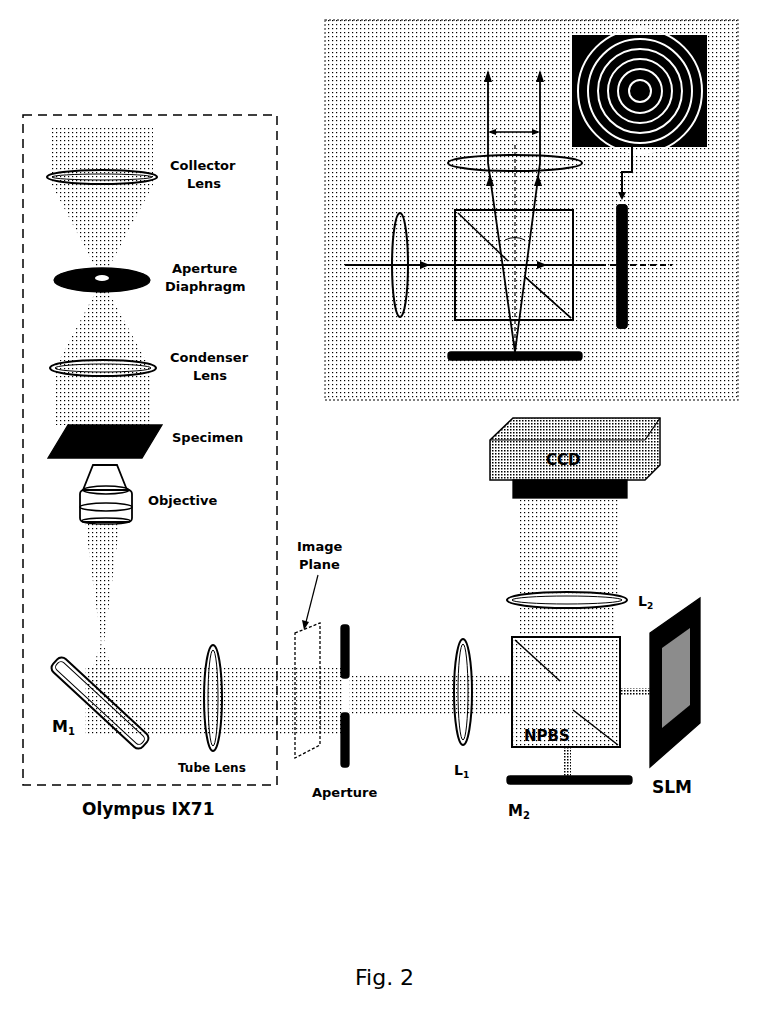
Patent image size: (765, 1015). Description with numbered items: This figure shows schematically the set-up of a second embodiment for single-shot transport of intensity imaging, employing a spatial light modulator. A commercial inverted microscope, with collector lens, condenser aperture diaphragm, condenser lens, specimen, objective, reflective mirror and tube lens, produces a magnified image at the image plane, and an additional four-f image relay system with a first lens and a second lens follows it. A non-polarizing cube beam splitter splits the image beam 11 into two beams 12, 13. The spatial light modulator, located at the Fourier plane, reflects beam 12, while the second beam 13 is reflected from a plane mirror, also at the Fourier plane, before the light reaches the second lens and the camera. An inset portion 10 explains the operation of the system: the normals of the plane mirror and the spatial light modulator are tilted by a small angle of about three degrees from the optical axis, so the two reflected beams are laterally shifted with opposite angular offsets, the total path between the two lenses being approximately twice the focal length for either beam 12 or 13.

The inset portion 10 is at (321, 83).
The image beam 11 is at (352, 263).
The beam 12 is at (593, 262).
The second beam 13 is at (505, 328).